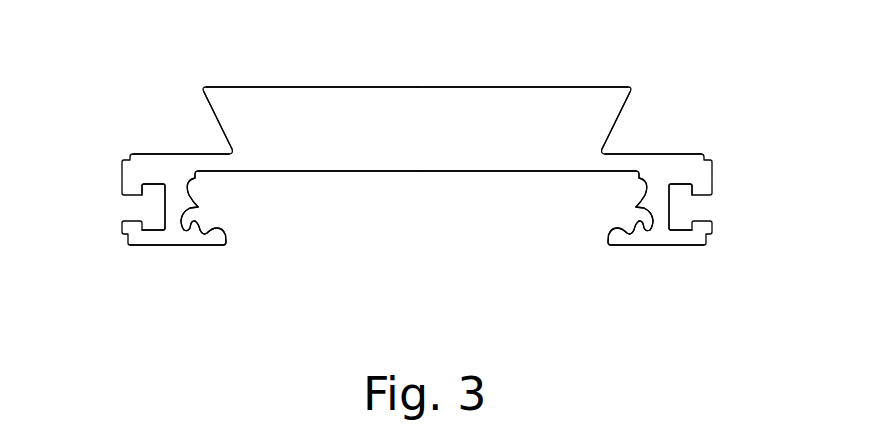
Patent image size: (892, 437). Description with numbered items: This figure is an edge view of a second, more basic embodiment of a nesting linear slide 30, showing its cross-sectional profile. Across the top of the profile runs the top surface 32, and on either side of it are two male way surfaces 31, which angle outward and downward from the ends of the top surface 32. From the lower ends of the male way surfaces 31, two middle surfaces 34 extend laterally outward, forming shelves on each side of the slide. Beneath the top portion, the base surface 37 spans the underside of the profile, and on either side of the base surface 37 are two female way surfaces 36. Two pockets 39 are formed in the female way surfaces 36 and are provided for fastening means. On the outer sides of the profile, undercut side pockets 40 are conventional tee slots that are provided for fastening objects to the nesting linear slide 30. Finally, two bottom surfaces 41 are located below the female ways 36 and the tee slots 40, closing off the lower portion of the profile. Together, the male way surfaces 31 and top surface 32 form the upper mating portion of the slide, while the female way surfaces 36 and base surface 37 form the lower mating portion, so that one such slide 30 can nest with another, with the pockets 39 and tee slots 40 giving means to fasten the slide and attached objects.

The nesting linear slide 30 is at (305, 52).
The male way surface 31 is at (210, 105).
The top surface 32 is at (535, 87).
The middle surface 34 is at (158, 152).
The female way surface 36 is at (199, 207).
The base surface 37 is at (460, 173).
The pocket 39 is at (180, 227).
The undercut side pocket 40 is at (162, 200).
The bottom surface 41 is at (202, 245).